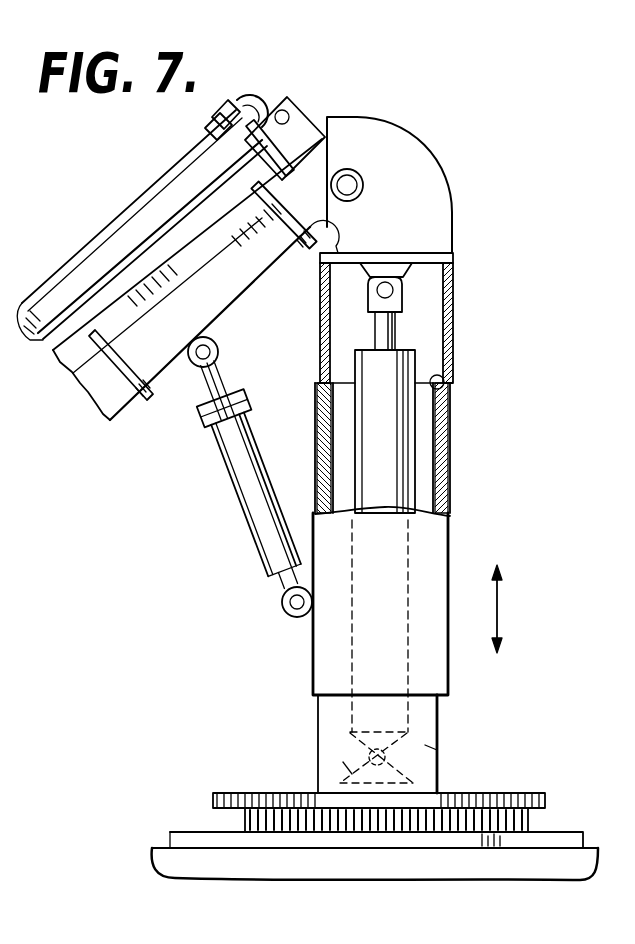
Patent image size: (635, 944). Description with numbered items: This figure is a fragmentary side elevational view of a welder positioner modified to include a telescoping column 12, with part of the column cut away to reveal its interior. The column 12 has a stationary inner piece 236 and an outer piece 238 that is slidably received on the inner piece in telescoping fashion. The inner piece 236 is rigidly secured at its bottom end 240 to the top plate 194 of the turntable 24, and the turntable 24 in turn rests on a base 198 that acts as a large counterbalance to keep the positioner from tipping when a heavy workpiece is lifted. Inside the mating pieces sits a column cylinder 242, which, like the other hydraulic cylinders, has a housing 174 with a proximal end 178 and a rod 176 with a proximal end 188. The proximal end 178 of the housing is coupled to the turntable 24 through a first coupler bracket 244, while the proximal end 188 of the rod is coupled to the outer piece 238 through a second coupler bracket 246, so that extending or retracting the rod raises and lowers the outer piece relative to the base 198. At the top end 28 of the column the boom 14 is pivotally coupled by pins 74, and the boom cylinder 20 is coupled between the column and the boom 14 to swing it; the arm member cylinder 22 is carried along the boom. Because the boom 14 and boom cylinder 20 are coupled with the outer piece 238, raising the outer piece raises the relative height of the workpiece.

The column 12 is at (463, 481).
The boom 14 is at (233, 297).
The boom cylinder 20 is at (248, 485).
The arm member cylinder 22 is at (104, 236).
The turntable 24 is at (497, 815).
The top end 28 is at (418, 163).
The pins 74 is at (345, 178).
The housing 174 is at (397, 498).
The rod 176 is at (380, 328).
The proximal end 178 is at (410, 733).
The proximal end 188 is at (396, 302).
The top plate 194 is at (213, 796).
The base 198 is at (346, 856).
The inner piece 236 is at (442, 380).
The outer piece 238 is at (453, 312).
The bottom end 240 is at (430, 795).
The column cylinder 242 is at (395, 438).
The first coupler bracket 244 is at (350, 768).
The second coupler bracket 246 is at (411, 278).